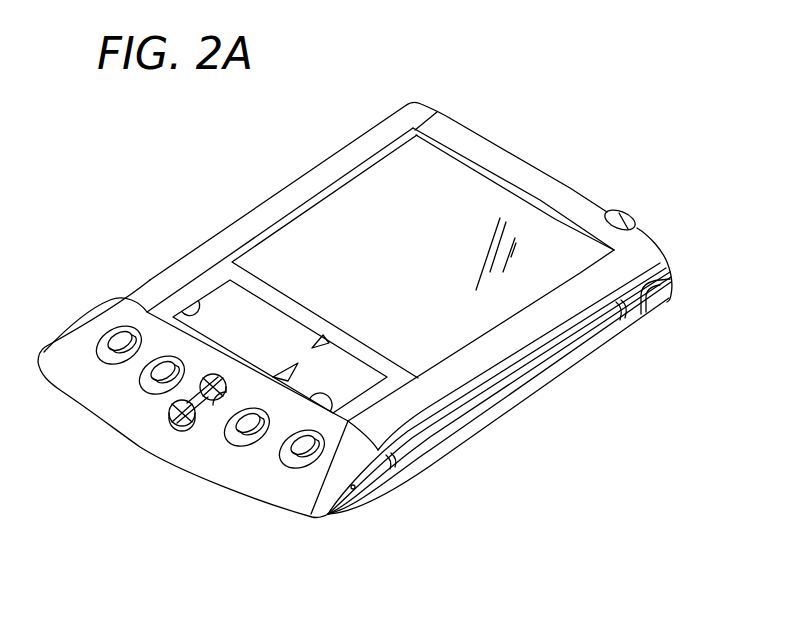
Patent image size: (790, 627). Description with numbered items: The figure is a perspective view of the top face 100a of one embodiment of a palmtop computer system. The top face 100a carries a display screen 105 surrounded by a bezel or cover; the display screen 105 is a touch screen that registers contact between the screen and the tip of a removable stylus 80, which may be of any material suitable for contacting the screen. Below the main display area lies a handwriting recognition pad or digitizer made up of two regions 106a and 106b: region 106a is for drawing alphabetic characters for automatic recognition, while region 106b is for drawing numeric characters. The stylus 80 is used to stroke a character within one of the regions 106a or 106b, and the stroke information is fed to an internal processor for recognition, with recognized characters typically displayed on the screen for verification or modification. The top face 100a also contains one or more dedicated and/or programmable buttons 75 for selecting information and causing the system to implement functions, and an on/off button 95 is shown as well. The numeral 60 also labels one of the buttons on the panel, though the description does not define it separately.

The top face 100a is at (196, 119).
The display screen 105 is at (427, 204).
The region 106a is at (258, 325).
The region 106b is at (333, 370).
The buttons 75 is at (120, 334).
The button 60 is at (141, 383).
The stylus 80 is at (517, 381).
The on/off button 95 is at (633, 215).